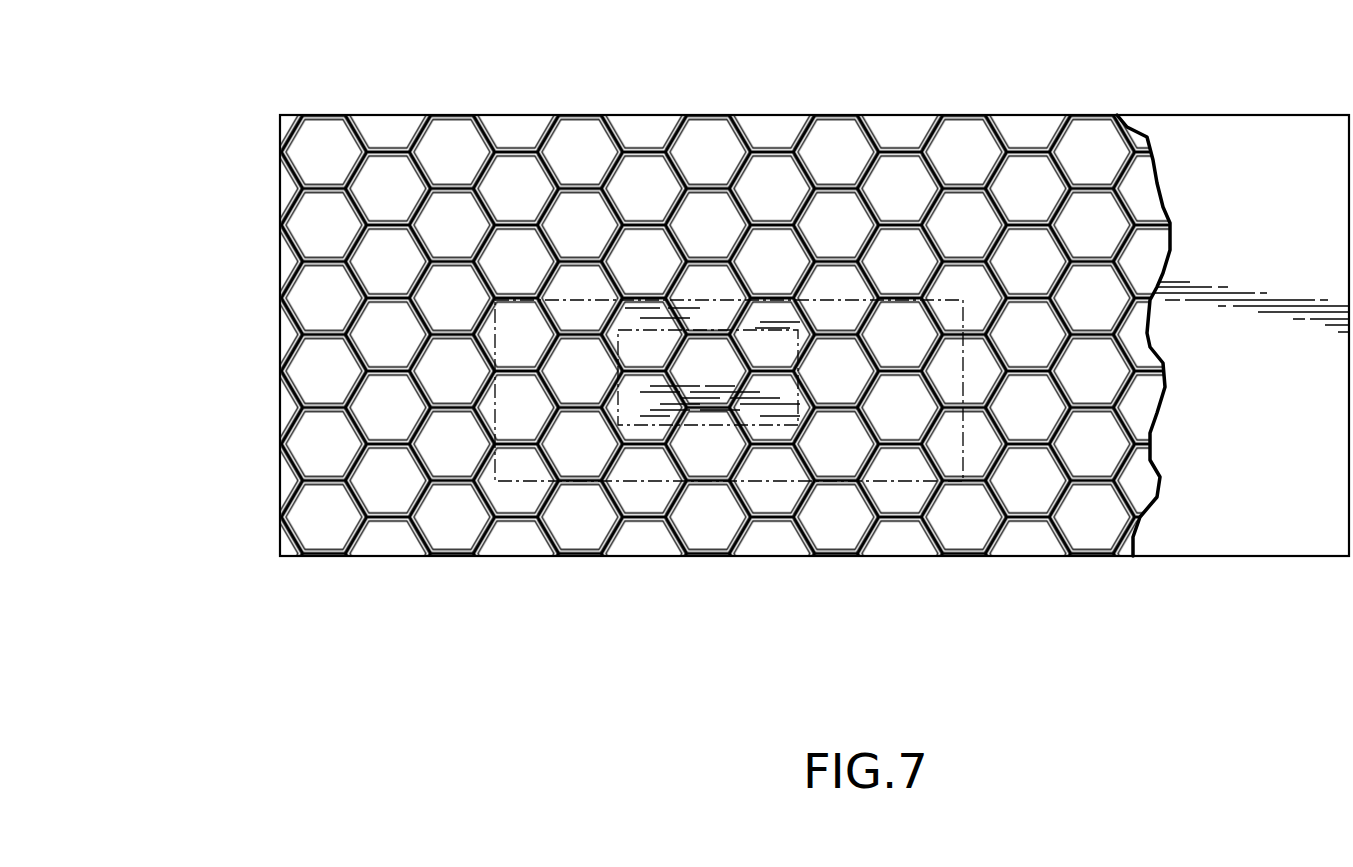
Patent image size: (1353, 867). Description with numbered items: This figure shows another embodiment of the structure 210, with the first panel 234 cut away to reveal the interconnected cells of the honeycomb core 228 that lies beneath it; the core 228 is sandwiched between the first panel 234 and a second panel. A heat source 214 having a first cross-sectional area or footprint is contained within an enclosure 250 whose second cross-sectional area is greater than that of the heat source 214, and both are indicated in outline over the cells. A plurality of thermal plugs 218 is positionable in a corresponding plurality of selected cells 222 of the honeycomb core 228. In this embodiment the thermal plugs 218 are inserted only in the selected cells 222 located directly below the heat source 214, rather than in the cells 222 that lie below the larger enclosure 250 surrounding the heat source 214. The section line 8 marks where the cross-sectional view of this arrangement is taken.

The section line 8- 8 is at (648, 100).
The honeycomb panel assembly 210 is at (212, 288).
The heat source 214 is at (765, 437).
The thermal plugs 218 is at (765, 350).
The selected cells 222 is at (685, 371).
The honeycomb core 228 is at (282, 553).
The first panel 234 is at (1251, 136).
The enclosure 250 is at (510, 490).